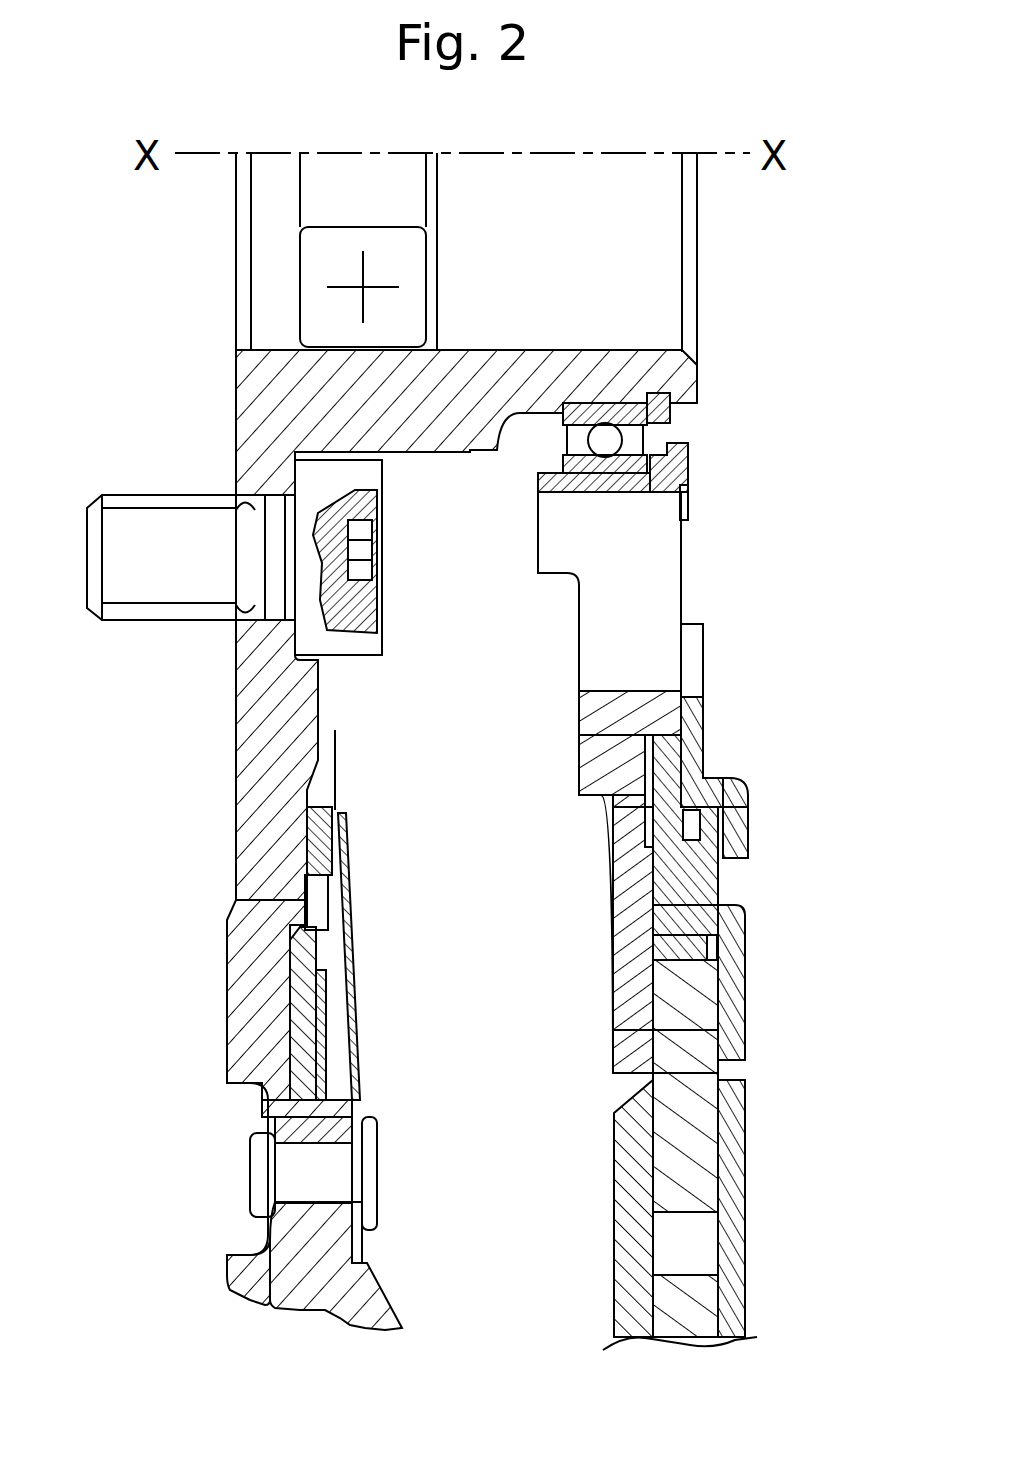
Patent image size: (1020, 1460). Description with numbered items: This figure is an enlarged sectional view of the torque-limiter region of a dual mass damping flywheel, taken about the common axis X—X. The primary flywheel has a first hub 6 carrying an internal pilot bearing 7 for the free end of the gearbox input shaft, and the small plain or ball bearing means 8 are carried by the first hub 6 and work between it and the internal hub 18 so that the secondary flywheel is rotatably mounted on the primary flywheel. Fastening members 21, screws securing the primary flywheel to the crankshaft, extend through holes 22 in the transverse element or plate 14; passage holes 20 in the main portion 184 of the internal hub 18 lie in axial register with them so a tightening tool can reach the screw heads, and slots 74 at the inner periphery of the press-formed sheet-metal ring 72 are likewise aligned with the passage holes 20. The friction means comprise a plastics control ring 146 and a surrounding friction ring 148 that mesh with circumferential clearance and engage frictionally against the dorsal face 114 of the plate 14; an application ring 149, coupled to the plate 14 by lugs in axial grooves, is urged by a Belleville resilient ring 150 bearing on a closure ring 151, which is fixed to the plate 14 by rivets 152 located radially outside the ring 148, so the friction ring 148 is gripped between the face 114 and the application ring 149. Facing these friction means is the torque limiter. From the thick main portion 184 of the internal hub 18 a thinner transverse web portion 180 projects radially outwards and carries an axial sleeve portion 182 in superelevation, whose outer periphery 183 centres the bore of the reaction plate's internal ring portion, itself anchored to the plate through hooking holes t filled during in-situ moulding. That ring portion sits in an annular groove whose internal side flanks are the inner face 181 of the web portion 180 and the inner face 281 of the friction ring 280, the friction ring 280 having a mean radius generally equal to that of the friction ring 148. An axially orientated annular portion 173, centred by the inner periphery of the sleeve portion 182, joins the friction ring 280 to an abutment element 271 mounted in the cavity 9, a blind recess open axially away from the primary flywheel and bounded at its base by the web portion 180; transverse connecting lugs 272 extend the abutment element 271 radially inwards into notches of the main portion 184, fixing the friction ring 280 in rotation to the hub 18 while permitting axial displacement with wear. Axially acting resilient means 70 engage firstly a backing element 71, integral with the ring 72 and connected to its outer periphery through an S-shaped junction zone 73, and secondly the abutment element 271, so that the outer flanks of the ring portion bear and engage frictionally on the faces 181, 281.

The first hub 6 is at (685, 380).
The internal pilot bearing 7 is at (300, 281).
The bearing means 8 is at (652, 432).
The cavity 9 is at (625, 915).
The transverse element 14 is at (262, 1282).
The internal hub 18 is at (692, 462).
The passage holes 20 is at (652, 498).
The fastening members 21 is at (142, 620).
The holes 22 is at (250, 537).
The axially acting resilient means 70 is at (732, 882).
The backing element 71 is at (748, 830).
The ring 72 is at (705, 717).
The junction zone 73 is at (727, 772).
The slots 74 is at (705, 665).
The dorsal face 114 is at (322, 845).
The control ring 146 is at (322, 812).
The friction ring 148 is at (305, 935).
The application ring 149 is at (325, 985).
The axially acting resilient ring 150 is at (280, 1095).
The closure ring 151 is at (315, 1125).
The rivets 152 is at (262, 1178).
The axially orientated annular portion 173 is at (742, 912).
The web portion 180 is at (614, 1060).
The inner face 181 is at (745, 1040).
The sleeve portion 182 is at (625, 952).
The outer periphery 183 is at (625, 1000).
The main portion 184 is at (580, 722).
The abutment element 271 is at (625, 868).
The transverse connecting lug 272 is at (595, 770).
The friction ring 280 is at (745, 955).
The inner face 281 is at (705, 1000).
The hooking holes t is at (697, 1270).